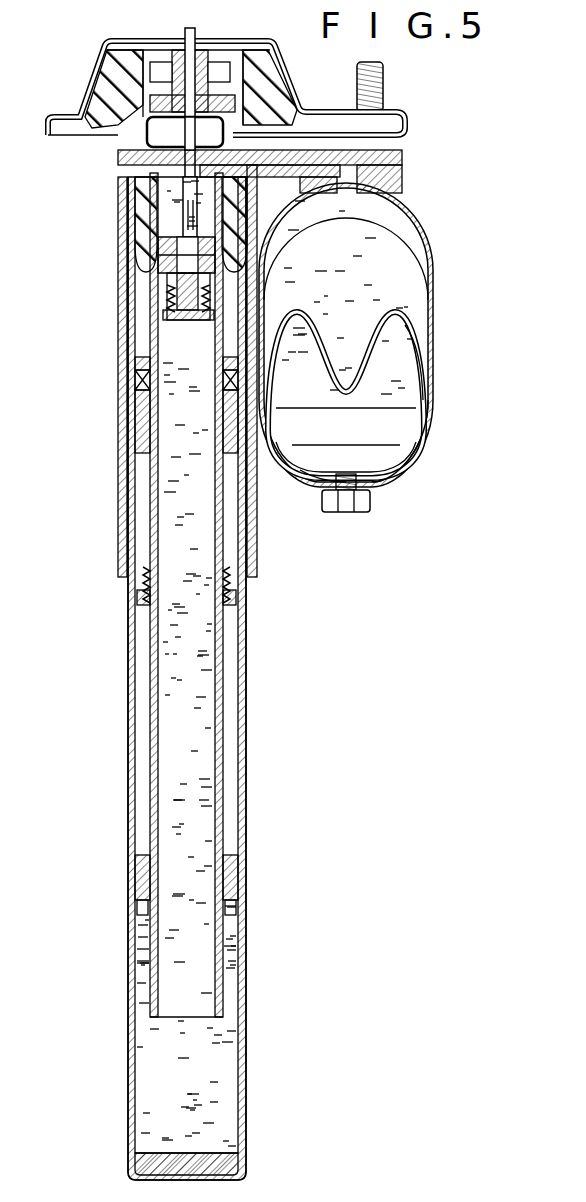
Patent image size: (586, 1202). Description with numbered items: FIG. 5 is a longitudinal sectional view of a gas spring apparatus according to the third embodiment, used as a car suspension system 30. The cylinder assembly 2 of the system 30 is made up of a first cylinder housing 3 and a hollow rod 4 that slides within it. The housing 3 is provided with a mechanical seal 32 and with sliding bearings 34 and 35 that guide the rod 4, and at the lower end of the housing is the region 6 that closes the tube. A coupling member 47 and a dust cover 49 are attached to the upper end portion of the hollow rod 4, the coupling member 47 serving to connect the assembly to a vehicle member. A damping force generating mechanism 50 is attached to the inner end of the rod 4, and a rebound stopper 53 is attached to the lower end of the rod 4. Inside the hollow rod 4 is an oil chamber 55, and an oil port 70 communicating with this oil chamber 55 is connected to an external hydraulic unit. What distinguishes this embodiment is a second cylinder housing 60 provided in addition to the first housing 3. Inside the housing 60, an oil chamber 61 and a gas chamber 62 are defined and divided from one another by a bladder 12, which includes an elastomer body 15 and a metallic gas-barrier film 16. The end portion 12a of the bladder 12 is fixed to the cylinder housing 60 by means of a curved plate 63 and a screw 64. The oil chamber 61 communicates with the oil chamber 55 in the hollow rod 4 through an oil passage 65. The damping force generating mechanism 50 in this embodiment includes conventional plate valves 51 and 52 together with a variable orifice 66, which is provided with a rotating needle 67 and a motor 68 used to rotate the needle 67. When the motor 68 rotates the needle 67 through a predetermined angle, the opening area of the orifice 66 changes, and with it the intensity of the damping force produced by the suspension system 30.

The cylinder assembly 2 is at (100, 765).
The cylinder housing 3 is at (133, 720).
The hollow rod 4 is at (152, 650).
The bottom closure 6 is at (160, 1070).
The bladder 12 is at (432, 320).
The end portion 12a is at (432, 420).
The elastomer body 15 is at (420, 345).
The metallic gas-barrier film 16 is at (415, 380).
The car suspension system 30 is at (452, 96).
The mechanical seal 32 is at (135, 385).
The sliding bearing 34 is at (140, 420).
The sliding bearing 35 is at (137, 877).
The coupling member 47 is at (117, 42).
The dust cover 49 is at (120, 505).
The damping force generating mechanism 50 is at (181, 385).
The plate valve 51 is at (130, 228).
The plate valve 52 is at (160, 285).
The rebound stopper 53 is at (138, 592).
The oil chamber 55 is at (200, 678).
The second cylinder housing 60 is at (440, 280).
The oil chamber 61 is at (405, 243).
The gas chamber 62 is at (412, 350).
The curved plate 63 is at (318, 472).
The screw 64 is at (358, 513).
The oil passage 65 is at (330, 192).
The variable orifice 66 is at (183, 302).
The rotating needle 67 is at (190, 190).
The motor 68 is at (162, 135).
The oil port 70 is at (205, 33).